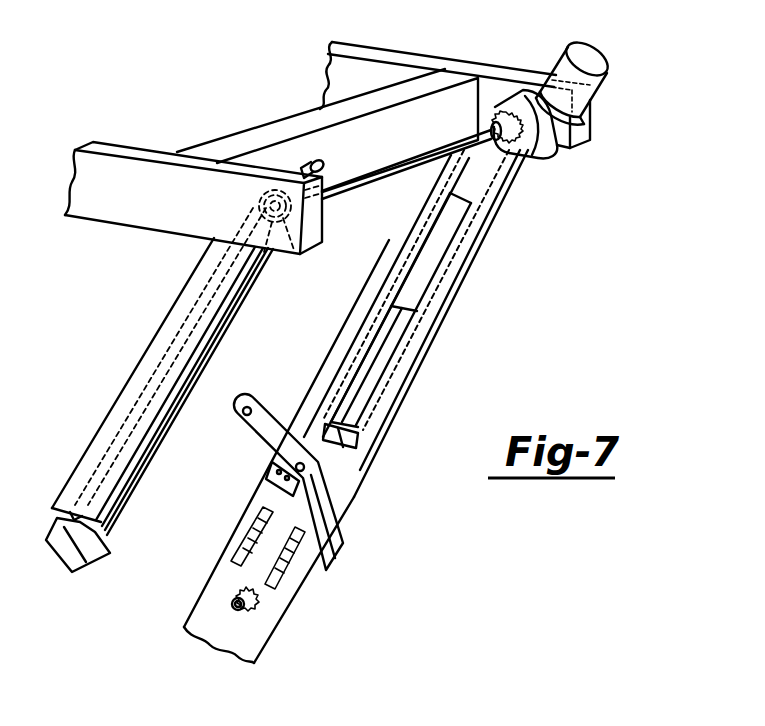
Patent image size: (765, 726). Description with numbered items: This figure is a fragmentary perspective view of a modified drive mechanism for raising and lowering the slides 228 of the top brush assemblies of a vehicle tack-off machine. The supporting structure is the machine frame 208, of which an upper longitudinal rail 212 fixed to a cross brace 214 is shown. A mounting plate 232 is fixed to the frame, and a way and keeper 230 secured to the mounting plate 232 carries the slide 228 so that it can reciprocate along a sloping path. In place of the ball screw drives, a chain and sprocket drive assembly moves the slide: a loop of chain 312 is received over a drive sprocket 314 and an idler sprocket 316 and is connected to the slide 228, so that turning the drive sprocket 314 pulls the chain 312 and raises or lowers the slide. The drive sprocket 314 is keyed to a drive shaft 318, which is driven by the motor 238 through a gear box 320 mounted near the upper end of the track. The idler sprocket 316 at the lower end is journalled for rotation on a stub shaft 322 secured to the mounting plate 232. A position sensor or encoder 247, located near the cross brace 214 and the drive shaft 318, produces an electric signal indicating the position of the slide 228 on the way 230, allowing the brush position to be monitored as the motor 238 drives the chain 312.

The frame 208 is at (414, 36).
The upper longitudinal rails 212 is at (455, 60).
The cross braces 214 is at (255, 136).
The motor 238 is at (606, 58).
The gear box 320 is at (293, 245).
The drive sprocket 314 is at (530, 160).
The chain 312 is at (497, 188).
The drive shaft 318 is at (405, 165).
The position sensor or encoder 247 is at (306, 164).
The way and keeper 230 is at (400, 307).
The mounting plate 232 is at (395, 392).
The slide 228 is at (350, 447).
The stub shaft 322 is at (230, 598).
The idler sprocket 316 is at (254, 609).